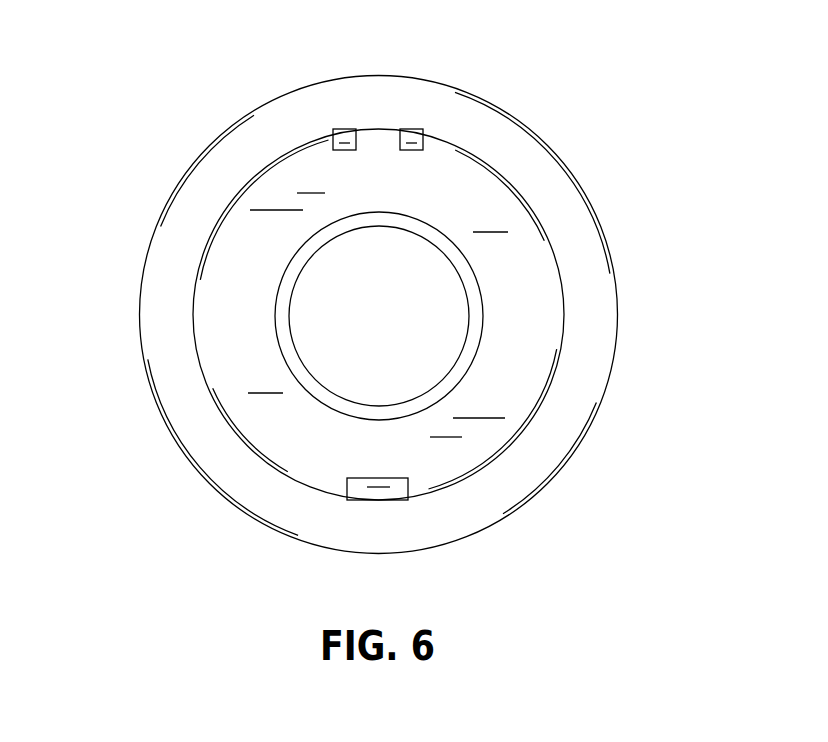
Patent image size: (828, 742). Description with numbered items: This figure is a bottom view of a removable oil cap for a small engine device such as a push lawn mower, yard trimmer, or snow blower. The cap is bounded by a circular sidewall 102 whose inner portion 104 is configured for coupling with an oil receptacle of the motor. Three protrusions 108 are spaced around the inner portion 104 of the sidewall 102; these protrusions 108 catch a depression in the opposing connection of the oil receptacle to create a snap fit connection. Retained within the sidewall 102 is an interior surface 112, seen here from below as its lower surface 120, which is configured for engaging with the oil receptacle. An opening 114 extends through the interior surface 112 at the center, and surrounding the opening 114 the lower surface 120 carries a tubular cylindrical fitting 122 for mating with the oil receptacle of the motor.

The sidewall 102 is at (593, 437).
The inner portion 104 is at (523, 190).
The protrusions 108 is at (343, 129).
The interior surface 112 is at (259, 249).
The opening 114 is at (347, 347).
The lower surface 120 is at (535, 280).
The tubular cylindrical fitting 122 is at (283, 314).